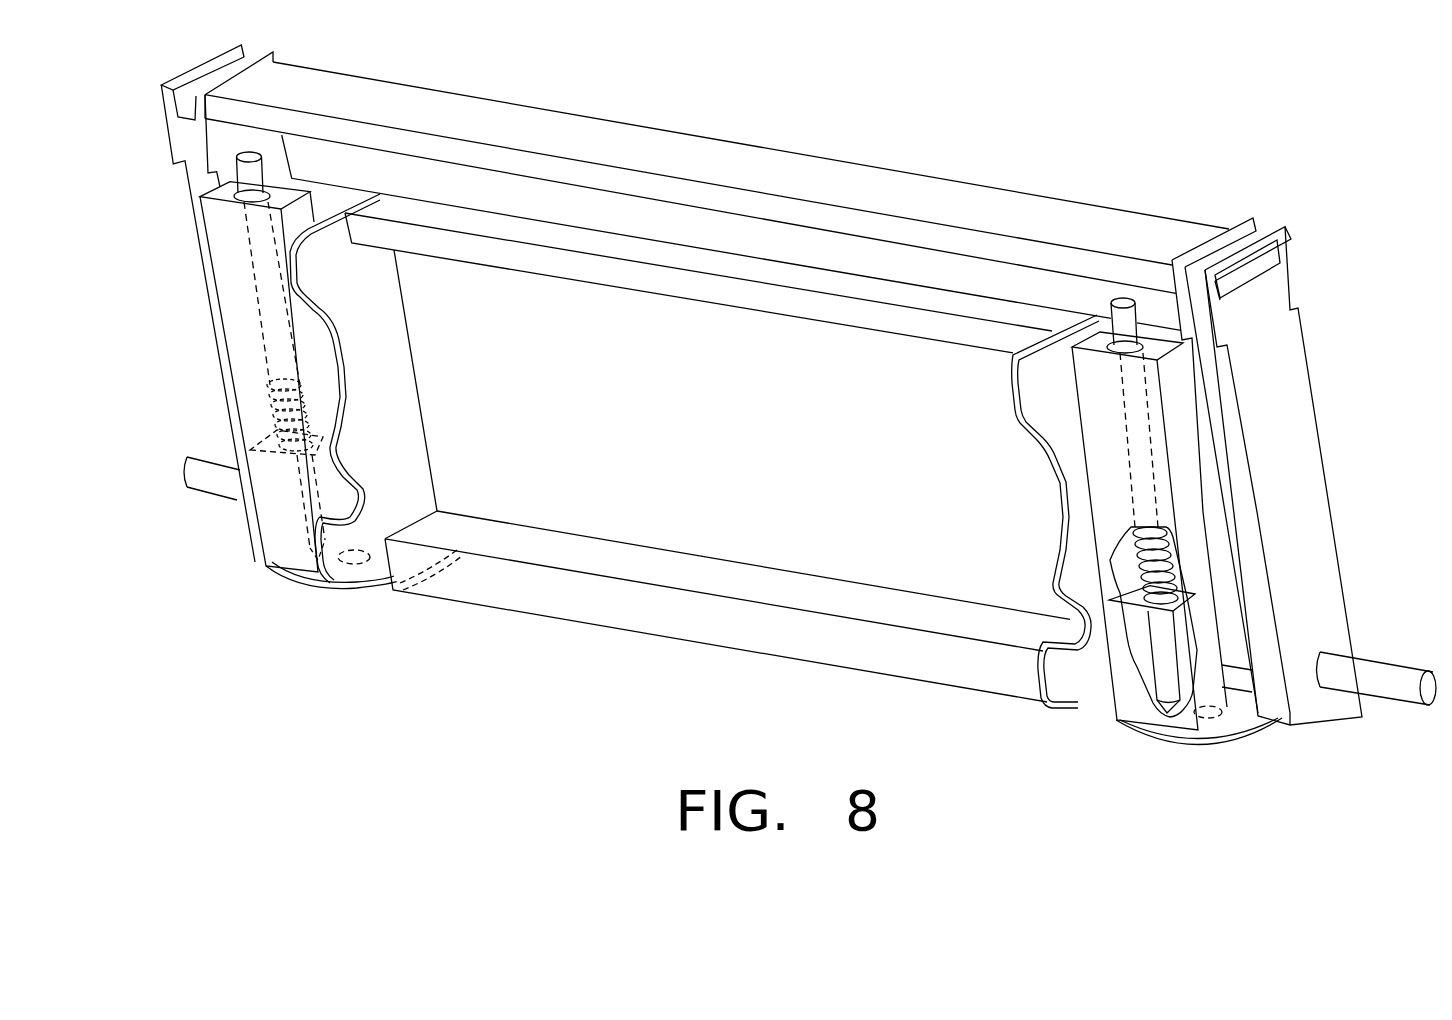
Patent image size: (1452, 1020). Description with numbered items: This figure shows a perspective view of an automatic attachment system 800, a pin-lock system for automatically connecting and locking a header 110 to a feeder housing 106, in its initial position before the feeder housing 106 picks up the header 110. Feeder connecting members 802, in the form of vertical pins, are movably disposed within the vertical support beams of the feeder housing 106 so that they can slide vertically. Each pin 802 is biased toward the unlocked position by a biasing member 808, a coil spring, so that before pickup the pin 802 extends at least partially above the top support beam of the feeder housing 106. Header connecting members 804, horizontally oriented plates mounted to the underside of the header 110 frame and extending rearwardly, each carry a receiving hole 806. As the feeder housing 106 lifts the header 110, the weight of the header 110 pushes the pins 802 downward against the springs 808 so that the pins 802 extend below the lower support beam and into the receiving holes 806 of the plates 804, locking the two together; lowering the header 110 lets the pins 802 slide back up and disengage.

The automatic attachment system 800 is at (1040, 180).
The feeder connecting member 802 is at (260, 315).
The header connecting member 804 is at (298, 583).
The receiving hole 806 is at (355, 565).
The biasing member 808 is at (275, 410).
The feeder housing 106 is at (713, 632).
The header 110 is at (1295, 388).